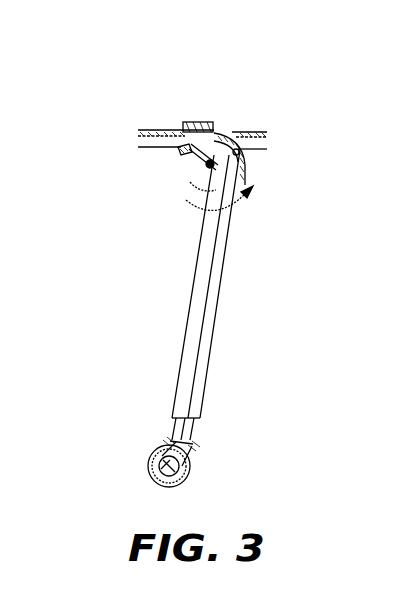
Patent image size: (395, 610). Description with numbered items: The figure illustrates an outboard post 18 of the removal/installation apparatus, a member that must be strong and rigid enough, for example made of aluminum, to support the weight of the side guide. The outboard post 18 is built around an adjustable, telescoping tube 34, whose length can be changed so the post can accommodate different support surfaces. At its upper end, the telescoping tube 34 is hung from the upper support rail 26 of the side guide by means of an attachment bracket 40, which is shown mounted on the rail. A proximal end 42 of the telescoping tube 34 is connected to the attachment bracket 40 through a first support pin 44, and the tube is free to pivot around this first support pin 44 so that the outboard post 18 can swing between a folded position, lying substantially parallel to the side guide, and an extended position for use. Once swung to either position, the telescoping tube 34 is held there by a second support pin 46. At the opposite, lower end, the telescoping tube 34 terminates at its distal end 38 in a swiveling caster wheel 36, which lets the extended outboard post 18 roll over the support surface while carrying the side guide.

The outboard post 18 is at (92, 110).
The upper support rail 26 is at (250, 134).
The telescoping tube 34 is at (225, 295).
The swiveling caster wheel 36 is at (150, 462).
The distal end 38 is at (195, 441).
The attachment bracket 40 is at (252, 160).
The proximal end 42 is at (247, 212).
The first support pin 44 is at (195, 165).
The second support pin 46 is at (205, 186).